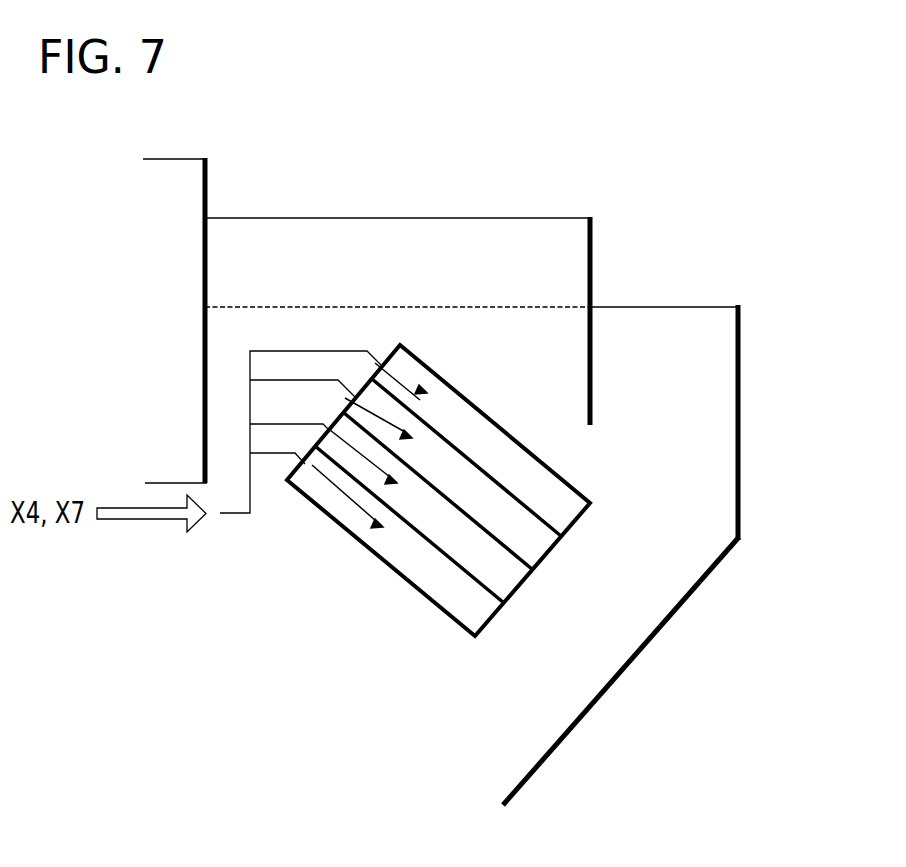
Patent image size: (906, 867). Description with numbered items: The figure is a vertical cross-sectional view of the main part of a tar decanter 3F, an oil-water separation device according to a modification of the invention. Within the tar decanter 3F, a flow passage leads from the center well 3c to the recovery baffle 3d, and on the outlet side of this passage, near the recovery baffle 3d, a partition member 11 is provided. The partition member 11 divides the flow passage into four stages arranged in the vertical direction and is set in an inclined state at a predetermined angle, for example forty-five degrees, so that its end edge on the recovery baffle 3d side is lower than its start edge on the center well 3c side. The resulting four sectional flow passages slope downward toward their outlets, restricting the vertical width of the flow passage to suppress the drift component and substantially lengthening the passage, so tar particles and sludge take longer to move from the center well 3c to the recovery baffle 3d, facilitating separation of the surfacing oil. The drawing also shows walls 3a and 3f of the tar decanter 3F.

The tar decanter 3F is at (433, 163).
The center well 3c is at (207, 192).
The recovery baffle 3d is at (592, 240).
The right wall 3a is at (742, 485).
The inclined wall 3f is at (662, 632).
The partition member 11 is at (485, 412).